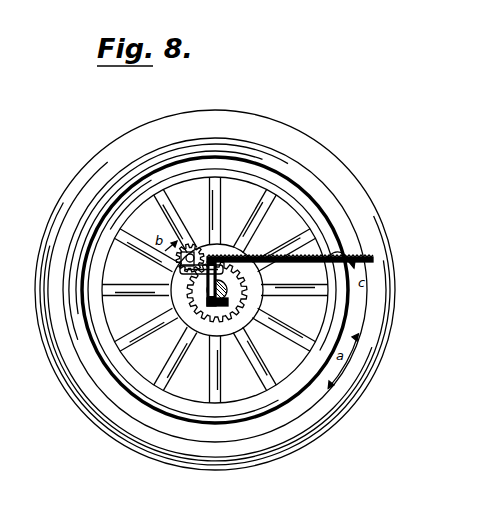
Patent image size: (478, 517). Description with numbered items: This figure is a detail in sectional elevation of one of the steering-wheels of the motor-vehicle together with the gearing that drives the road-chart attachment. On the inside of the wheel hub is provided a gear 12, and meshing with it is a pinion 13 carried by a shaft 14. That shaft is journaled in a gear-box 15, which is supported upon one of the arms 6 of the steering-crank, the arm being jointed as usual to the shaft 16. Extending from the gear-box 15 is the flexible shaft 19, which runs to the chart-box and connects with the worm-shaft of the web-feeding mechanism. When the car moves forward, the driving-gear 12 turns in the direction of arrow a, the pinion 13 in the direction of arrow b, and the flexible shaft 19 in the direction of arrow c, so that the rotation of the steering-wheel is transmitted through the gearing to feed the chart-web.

The arm of the steering-crank 6 is at (199, 283).
The gear 12 is at (250, 298).
The pinion 13 is at (181, 262).
The shaft 14 is at (193, 246).
The gear-box 15 is at (186, 268).
The shaft 16 is at (205, 304).
The flexible shaft 19 is at (262, 257).